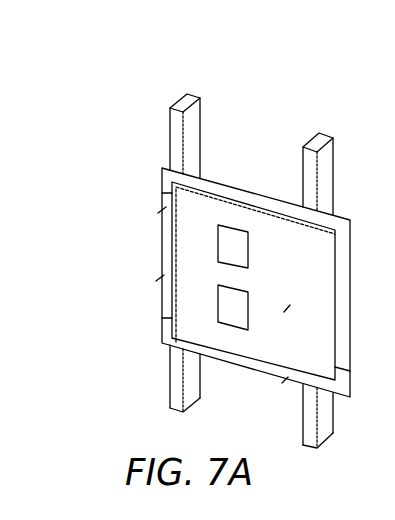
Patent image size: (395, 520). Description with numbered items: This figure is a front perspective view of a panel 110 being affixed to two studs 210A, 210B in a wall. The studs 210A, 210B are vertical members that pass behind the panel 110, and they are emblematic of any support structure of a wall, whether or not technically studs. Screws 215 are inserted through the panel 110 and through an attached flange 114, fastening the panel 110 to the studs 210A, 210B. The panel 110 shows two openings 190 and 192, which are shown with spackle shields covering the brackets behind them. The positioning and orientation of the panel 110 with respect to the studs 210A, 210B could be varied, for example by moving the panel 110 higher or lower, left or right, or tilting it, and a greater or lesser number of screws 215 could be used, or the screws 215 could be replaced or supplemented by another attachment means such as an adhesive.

The panel 110 is at (238, 212).
The attached flange 114 is at (163, 311).
The opening 190 is at (250, 252).
The opening 192 is at (248, 310).
The stud 210A is at (197, 93).
The stud 210B is at (323, 137).
The screws 215 is at (157, 278).